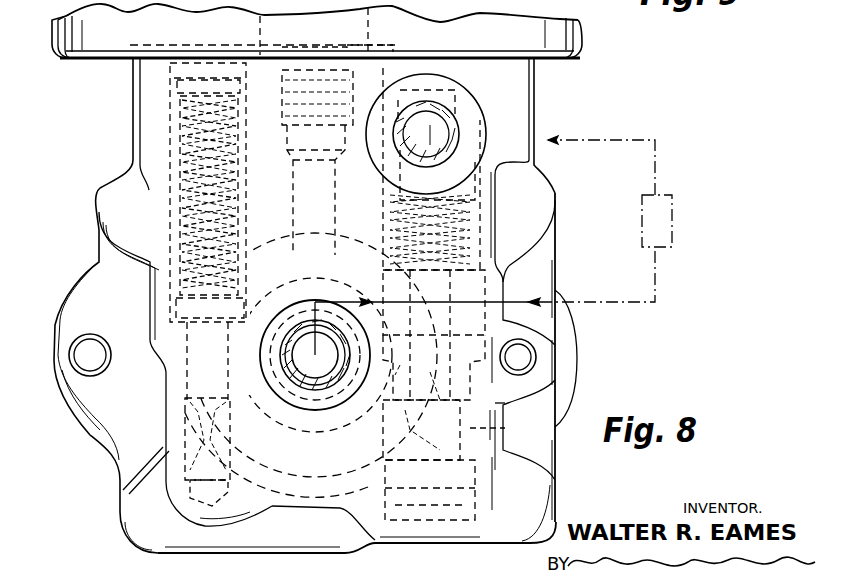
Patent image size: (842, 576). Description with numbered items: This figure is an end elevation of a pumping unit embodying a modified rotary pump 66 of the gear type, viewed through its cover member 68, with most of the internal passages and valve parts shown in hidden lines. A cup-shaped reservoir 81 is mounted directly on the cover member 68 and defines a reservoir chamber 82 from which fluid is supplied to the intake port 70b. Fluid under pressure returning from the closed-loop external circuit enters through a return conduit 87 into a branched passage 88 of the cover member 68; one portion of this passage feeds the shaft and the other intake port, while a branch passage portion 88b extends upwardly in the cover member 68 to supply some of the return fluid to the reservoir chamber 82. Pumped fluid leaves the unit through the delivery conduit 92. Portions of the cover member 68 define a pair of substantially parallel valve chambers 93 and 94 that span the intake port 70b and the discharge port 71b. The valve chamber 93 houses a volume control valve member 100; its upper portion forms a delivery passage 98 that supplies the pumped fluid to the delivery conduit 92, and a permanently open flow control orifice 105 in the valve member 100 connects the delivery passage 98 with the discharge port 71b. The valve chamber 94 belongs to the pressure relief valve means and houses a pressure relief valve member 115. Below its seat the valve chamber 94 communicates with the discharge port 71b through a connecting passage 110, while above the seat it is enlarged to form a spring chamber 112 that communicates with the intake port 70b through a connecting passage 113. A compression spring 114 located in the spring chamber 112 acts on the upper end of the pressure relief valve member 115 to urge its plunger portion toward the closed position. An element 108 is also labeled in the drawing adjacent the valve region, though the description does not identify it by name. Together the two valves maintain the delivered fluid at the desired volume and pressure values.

The rotary pump 66 is at (540, 122).
The cover member 68 is at (432, 533).
The intake port 70b is at (365, 238).
The discharge port 71b is at (322, 478).
The reservoir 81 is at (582, 35).
The reservoir chamber 82 is at (560, 61).
The return conduit 87 is at (301, 386).
The branched passage 88 is at (327, 386).
The branch passage portion 88b is at (306, 268).
The delivery conduit 92 is at (448, 130).
The valve chamber 93 is at (505, 412).
The valve chamber 94 is at (156, 447).
The delivery passage 98 is at (495, 188).
The volume control valve member 100 is at (505, 432).
The flow control orifice 105 is at (485, 430).
The valve spring 108 is at (498, 216).
The connecting passage 110 is at (175, 402).
The spring chamber 112 is at (180, 136).
The connecting passage 113 is at (176, 300).
The compression spring 114 is at (275, 196).
The pressure relief valve member 115 is at (200, 372).